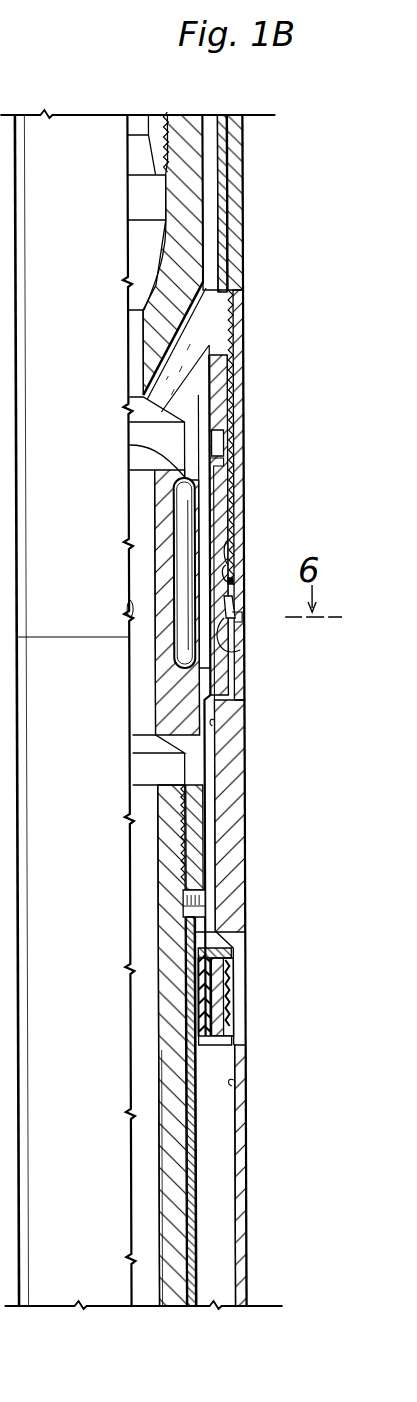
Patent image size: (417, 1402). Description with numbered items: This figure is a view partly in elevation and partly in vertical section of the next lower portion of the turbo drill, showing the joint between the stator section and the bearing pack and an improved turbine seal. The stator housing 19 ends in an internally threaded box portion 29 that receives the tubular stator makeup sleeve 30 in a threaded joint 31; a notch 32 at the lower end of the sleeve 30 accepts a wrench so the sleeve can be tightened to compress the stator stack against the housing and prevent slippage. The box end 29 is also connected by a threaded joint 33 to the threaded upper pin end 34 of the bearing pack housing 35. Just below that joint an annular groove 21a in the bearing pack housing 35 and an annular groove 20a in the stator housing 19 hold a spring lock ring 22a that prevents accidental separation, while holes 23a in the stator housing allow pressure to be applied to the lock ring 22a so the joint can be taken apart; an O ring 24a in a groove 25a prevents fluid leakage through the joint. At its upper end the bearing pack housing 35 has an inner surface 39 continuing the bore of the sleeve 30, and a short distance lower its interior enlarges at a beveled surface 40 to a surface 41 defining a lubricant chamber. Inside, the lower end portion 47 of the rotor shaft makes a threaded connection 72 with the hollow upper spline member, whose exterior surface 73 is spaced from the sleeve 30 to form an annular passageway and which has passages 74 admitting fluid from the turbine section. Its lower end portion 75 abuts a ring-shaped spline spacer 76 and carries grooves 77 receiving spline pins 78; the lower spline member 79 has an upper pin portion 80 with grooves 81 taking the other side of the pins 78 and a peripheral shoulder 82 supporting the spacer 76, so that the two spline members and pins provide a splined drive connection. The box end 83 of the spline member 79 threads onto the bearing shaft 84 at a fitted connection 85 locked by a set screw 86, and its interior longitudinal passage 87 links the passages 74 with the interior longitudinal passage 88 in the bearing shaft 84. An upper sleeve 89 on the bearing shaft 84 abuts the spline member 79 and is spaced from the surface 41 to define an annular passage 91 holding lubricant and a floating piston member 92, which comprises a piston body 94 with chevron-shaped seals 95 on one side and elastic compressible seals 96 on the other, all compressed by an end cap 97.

The stator housing 19 is at (236, 200).
The annular groove 20a is at (233, 588).
The annular groove 21a is at (232, 642).
The spring lock ring 22a is at (236, 624).
The holes 23a is at (235, 602).
The O ring 24a is at (228, 574).
The groove 25a is at (236, 544).
The box portion 29 is at (216, 470).
The stator makeup sleeve 30 is at (224, 278).
The threaded joint 31 is at (233, 342).
The notch 32 is at (216, 440).
The threaded joint 33 is at (228, 500).
The threaded upper pin end 34 is at (213, 462).
The bearing pack housing 35 is at (232, 796).
The inner surface 39 is at (214, 722).
The beveled surface 40 is at (226, 921).
The inner surface 41 is at (226, 1083).
The lower end portion of rotor shaft 47 is at (150, 146).
The threaded connection 72 is at (170, 136).
The exterior surface 73 is at (205, 178).
The passages 74 is at (165, 372).
The lower end portion 75 is at (127, 605).
The spline spacer 76 is at (198, 670).
The grooves 77 is at (156, 447).
The spline pins 78 is at (183, 516).
The lower spline member 79 is at (158, 682).
The upper pin portion 80 is at (162, 546).
The grooves 81 is at (170, 492).
The peripheral shoulder 82 is at (210, 692).
The box end 83 is at (182, 824).
The bearing shaft 84 is at (170, 1206).
The threaded joint 85 is at (180, 850).
The set screw 86 is at (192, 893).
The interior longitudinal passage 87 is at (152, 574).
The interior longitudinal passage 88 is at (172, 1010).
The upper sleeve 89 is at (186, 1166).
The annular passage 91 is at (212, 1108).
The floating piston member 92 is at (228, 1003).
The piston body 94 is at (218, 1046).
The chevron-shaped seals 95 is at (196, 984).
The elastic compressible seals 96 is at (220, 974).
The end cap 97 is at (233, 950).